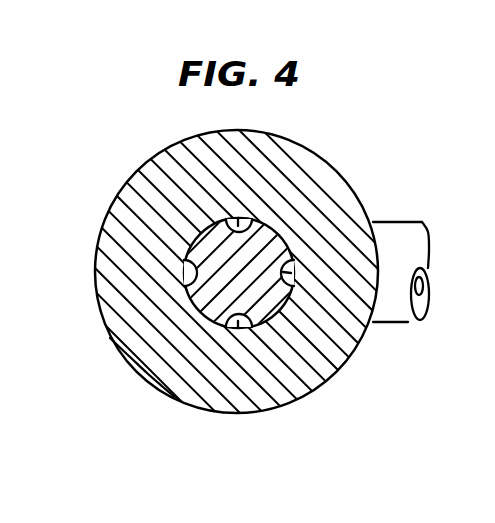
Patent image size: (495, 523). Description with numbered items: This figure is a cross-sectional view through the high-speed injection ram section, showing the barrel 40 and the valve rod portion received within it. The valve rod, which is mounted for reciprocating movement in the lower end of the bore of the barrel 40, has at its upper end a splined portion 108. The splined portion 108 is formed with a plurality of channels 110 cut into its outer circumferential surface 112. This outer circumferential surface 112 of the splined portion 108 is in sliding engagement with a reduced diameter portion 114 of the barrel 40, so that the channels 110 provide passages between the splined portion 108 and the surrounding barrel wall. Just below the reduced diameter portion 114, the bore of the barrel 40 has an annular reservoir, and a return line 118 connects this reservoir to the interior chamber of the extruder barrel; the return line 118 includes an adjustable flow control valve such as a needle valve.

The barrel 40 is at (348, 158).
The splined portion 108 is at (261, 299).
The channels 110 is at (238, 224).
The outer circumferential surface 112 is at (232, 326).
The reduced diameter portion 114 is at (215, 221).
The return line 118 is at (400, 315).